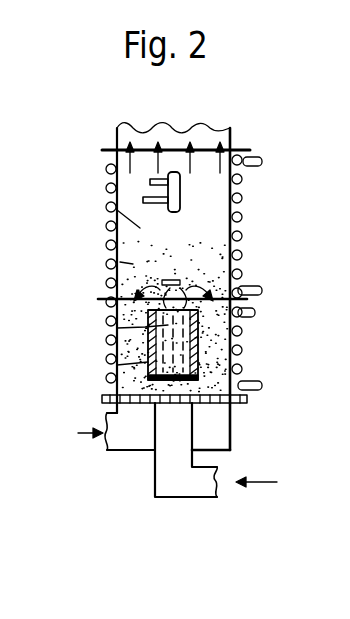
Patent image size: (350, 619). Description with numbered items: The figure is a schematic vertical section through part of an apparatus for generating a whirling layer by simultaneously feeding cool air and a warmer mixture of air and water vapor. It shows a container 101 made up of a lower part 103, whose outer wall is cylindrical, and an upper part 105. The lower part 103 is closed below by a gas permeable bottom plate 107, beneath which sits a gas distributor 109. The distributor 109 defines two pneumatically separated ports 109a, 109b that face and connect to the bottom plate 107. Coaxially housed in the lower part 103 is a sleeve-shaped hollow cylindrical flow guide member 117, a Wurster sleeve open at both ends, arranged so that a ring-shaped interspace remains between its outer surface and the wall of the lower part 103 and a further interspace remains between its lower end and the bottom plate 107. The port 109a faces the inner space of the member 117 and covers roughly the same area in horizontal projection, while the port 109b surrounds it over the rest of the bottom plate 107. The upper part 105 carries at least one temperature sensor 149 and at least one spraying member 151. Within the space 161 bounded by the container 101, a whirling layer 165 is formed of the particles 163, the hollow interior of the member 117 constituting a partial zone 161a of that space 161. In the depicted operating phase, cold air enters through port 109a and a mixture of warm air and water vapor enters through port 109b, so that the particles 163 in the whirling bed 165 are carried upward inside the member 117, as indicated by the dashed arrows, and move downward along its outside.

The container 101 is at (90, 243).
The lower part 103 is at (120, 338).
The upper part 105 is at (107, 158).
The gas permeable bottom plate 107 is at (151, 404).
The gas distributor 109 is at (230, 450).
The port 109a is at (170, 408).
The port 109b is at (108, 405).
The flow guide member 117 is at (117, 365).
The temperature sensor 149 is at (172, 280).
The spraying member 151 is at (180, 190).
The space 161 is at (117, 210).
The partial zone 161a is at (117, 328).
The particles 163 is at (120, 262).
The whirling layer 165 is at (212, 249).